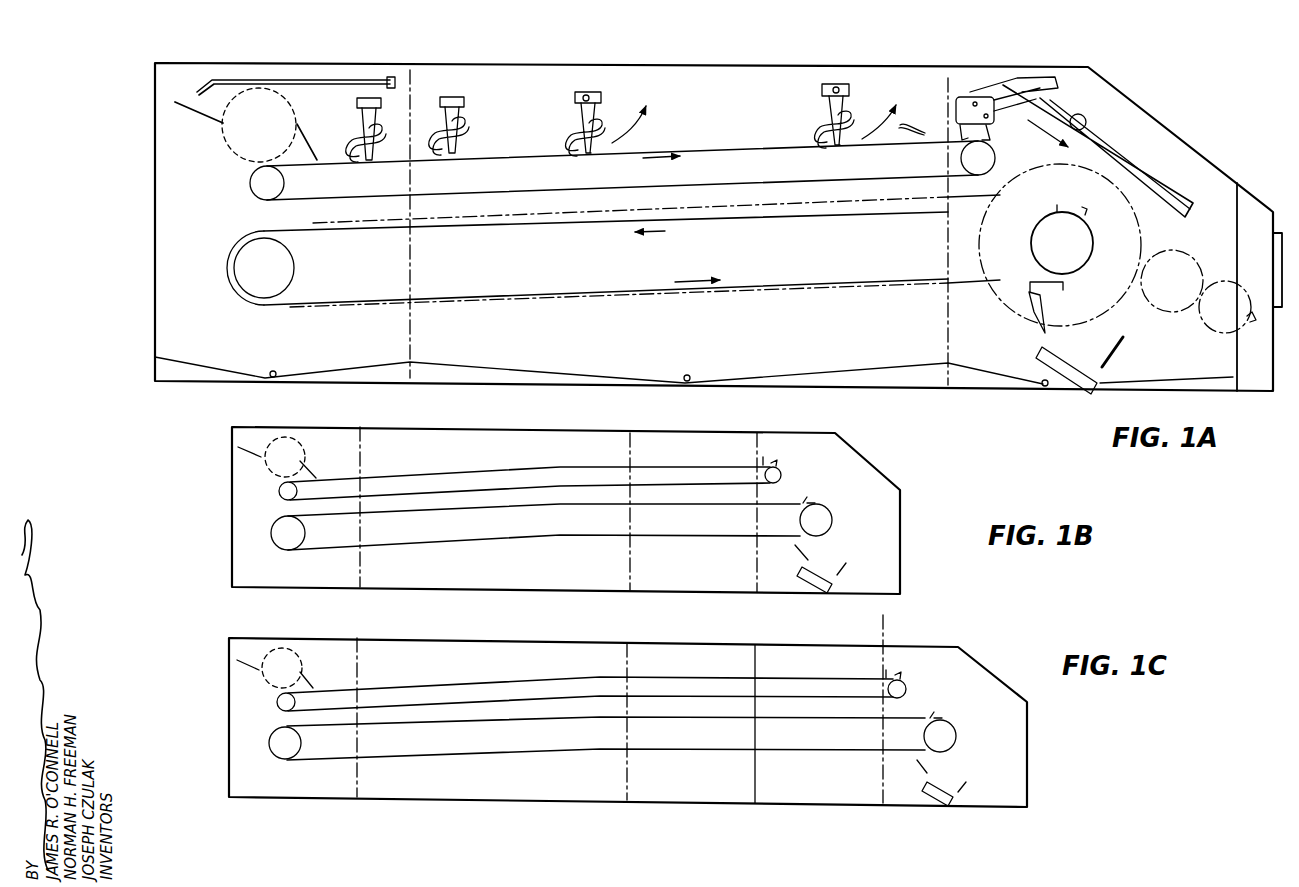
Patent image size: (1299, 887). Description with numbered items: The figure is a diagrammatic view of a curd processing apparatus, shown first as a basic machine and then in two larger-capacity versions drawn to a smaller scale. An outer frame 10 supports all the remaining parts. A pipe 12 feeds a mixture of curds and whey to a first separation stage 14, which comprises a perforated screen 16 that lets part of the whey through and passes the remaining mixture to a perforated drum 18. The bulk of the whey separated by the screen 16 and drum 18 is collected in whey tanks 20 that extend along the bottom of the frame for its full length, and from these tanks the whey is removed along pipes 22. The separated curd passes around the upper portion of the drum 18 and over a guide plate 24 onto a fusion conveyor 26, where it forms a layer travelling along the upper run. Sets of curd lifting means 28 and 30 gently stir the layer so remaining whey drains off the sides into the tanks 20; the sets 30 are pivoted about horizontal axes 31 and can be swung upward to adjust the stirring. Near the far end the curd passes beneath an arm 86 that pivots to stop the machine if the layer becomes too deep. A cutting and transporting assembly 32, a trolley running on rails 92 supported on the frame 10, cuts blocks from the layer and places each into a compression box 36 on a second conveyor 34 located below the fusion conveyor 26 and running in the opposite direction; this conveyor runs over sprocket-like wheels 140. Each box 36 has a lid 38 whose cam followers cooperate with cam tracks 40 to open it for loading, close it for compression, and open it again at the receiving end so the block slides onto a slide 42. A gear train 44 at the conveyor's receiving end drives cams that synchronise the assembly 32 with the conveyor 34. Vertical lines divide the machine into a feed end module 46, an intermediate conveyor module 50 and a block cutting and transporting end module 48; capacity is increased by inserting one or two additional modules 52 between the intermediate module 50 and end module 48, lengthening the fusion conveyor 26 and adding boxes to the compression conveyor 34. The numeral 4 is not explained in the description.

In FIG. 1A, the outlet 4 is at (1256, 320).
In FIG. 1A, the outer frame 10 is at (152, 297).
In FIG. 1B, the outer frame 10 is at (232, 503).
In FIG. 1C, the outer frame 10 is at (229, 702).
In FIG. 1A, the pipe 12 is at (290, 78).
In FIG. 1A, the first separation stage 14 is at (210, 130).
In FIG. 1A, the perforated screen 16 is at (188, 110).
In FIG. 1A, the perforated drum 18 is at (233, 148).
In FIG. 1B, the perforated drum 18 is at (290, 447).
In FIG. 1C, the perforated drum 18 is at (289, 653).
In FIG. 1A, the whey tanks 20 is at (251, 374).
In FIG. 1A, the pipes 22 is at (278, 372).
In FIG. 1A, the guide plate 24 is at (318, 160).
In FIG. 1A, the fusion conveyor 26 is at (252, 184).
In FIG. 1B, the fusion conveyor 26 is at (440, 470).
In FIG. 1C, the fusion conveyor 26 is at (442, 685).
In FIG. 1A, the curd lifting means 28 is at (381, 128).
In FIG. 1A, the curd lifting means 30 is at (577, 90).
In FIG. 1A, the horizontal axes 31 is at (588, 94).
In FIG. 1A, the cutting and transporting assembly 32 is at (970, 92).
In FIG. 1B, the cutting and transporting assembly 32 is at (777, 459).
In FIG. 1C, the cutting and transporting assembly 32 is at (902, 675).
In FIG. 1A, the second conveyor 34 is at (232, 247).
In FIG. 1B, the second conveyor 34 is at (527, 540).
In FIG. 1C, the second conveyor 34 is at (415, 742).
In FIG. 1A, the compression boxes 36 is at (1064, 285).
In FIG. 1B, the compression boxes 36 is at (825, 503).
In FIG. 1C, the compression boxes 36 is at (955, 723).
In FIG. 1A, the lid 38 is at (1048, 323).
In FIG. 1A, the cam tracks 40 is at (226, 275).
In FIG. 1A, the slide 42 is at (1083, 382).
In FIG. 1B, the slide 42 is at (811, 583).
In FIG. 1C, the slide 42 is at (940, 802).
In FIG. 1A, the gear train 44 is at (1150, 244).
In FIG. 1A, the curds and whey feed end module 46 is at (200, 331).
In FIG. 1B, the curds and whey feed end module 46 is at (272, 578).
In FIG. 1C, the curds and whey feed end module 46 is at (317, 789).
In FIG. 1A, the block cutting and transporting end module 48 is at (1192, 349).
In FIG. 1B, the block cutting and transporting end module 48 is at (889, 583).
In FIG. 1C, the block cutting and transporting end module 48 is at (1009, 771).
In FIG. 1A, the intermediate conveyor module 50 is at (818, 329).
In FIG. 1B, the intermediate conveyor module 50 is at (478, 581).
In FIG. 1C, the intermediate conveyor module 50 is at (531, 783).
In FIG. 1B, the additional module 52 is at (681, 581).
In FIG. 1C, the additional module 52 is at (699, 781).
In FIG. 1A, the arm 86 is at (909, 124).
In FIG. 1A, the rails 92 is at (1147, 187).
In FIG. 1A, the sprocket-like wheel 140 is at (1045, 238).